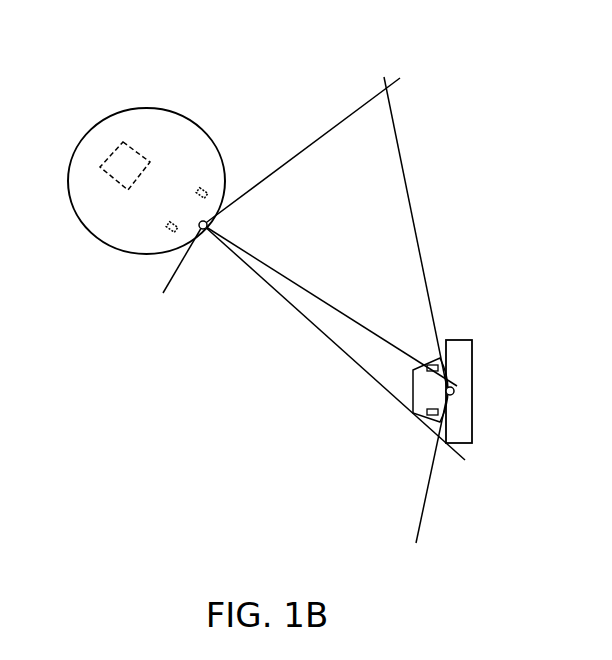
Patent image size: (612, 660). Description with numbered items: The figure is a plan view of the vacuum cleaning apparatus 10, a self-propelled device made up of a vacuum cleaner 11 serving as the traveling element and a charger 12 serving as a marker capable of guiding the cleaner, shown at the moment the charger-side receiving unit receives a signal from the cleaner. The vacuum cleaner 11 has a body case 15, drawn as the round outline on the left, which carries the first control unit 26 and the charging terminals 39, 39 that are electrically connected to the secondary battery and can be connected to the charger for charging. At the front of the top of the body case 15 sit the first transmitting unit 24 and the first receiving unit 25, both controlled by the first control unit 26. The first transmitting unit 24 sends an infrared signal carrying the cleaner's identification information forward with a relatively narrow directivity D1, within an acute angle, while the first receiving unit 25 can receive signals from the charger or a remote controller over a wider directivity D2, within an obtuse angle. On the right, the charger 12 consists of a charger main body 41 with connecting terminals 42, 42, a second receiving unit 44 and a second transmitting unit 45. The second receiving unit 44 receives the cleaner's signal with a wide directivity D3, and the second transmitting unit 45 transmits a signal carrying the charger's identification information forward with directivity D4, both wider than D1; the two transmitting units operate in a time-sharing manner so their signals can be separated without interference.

The vacuum cleaning apparatus 10 is at (310, 57).
The vacuum cleaner 11 is at (114, 106).
The charger 12 is at (468, 338).
The body case 15 is at (204, 130).
The first transmitting unit 24 is at (214, 253).
The first receiving unit 25 is at (205, 231).
The first control unit 26 is at (113, 157).
The charging terminals 39 is at (197, 191).
The charger main body 41 is at (463, 437).
The connecting terminals 42 is at (432, 366).
The second receiving unit 44 is at (495, 385).
The second transmitting unit 45 is at (454, 390).
The directivity of the first transmitting unit D1 is at (282, 274).
The directivity of the first receiving unit D2 is at (335, 128).
The directivity of the second receiving unit D3 is at (440, 310).
The directivity of the second transmitting unit D4 is at (417, 232).